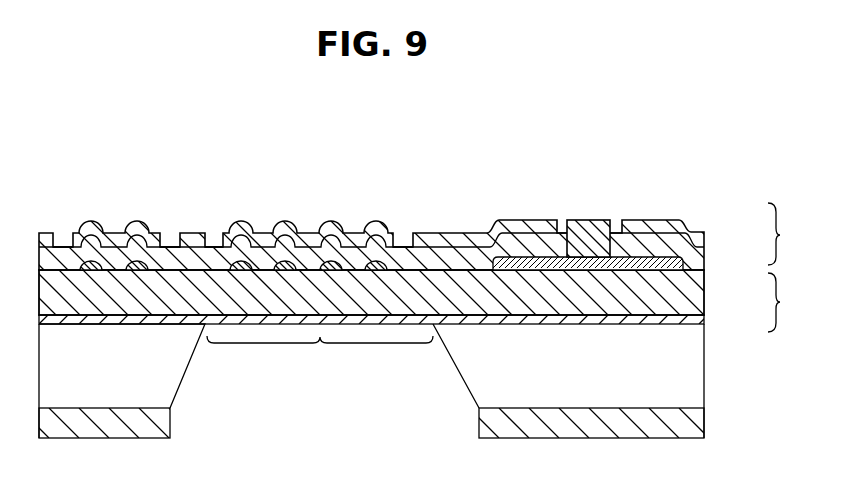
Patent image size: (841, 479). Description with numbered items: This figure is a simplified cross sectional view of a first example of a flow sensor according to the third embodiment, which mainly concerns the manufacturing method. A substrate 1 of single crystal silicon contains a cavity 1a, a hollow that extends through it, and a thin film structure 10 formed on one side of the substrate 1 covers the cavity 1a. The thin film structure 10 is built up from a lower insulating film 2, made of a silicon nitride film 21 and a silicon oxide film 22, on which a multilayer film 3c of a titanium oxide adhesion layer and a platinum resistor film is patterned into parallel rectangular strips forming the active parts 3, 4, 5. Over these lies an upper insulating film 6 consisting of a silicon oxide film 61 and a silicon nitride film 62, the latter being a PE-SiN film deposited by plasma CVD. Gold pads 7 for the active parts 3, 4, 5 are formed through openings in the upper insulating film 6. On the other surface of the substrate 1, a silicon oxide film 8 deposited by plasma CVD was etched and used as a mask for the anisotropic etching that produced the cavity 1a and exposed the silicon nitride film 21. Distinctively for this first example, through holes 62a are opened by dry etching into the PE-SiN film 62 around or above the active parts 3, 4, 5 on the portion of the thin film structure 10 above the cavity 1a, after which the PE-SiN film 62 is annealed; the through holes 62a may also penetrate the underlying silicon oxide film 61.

The substrate 1 is at (692, 377).
The cavity 1a is at (218, 398).
The lower insulating film 2 is at (783, 302).
The active part 3 is at (137, 243).
The multilayer film 3c is at (650, 262).
The active part 4 is at (285, 233).
The active part 5 is at (331, 233).
The upper insulating film 6 is at (783, 234).
The pad 7 is at (589, 220).
The silicon oxide film 8 is at (692, 420).
The thin film structure 10 is at (320, 356).
The silicon nitride film 21 is at (704, 315).
The silicon oxide film 22 is at (704, 290).
The silicon oxide film 61 is at (704, 258).
The silicon nitride film 62 is at (704, 233).
The through hole 62a is at (63, 246).